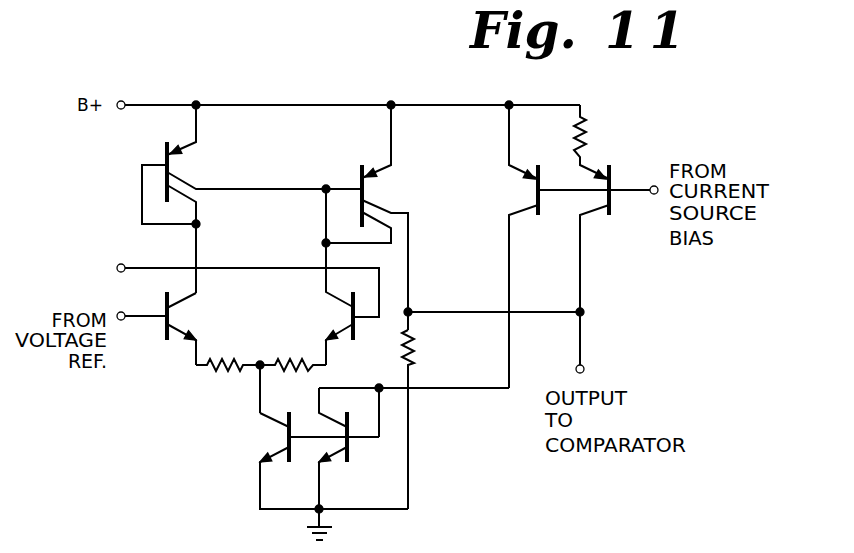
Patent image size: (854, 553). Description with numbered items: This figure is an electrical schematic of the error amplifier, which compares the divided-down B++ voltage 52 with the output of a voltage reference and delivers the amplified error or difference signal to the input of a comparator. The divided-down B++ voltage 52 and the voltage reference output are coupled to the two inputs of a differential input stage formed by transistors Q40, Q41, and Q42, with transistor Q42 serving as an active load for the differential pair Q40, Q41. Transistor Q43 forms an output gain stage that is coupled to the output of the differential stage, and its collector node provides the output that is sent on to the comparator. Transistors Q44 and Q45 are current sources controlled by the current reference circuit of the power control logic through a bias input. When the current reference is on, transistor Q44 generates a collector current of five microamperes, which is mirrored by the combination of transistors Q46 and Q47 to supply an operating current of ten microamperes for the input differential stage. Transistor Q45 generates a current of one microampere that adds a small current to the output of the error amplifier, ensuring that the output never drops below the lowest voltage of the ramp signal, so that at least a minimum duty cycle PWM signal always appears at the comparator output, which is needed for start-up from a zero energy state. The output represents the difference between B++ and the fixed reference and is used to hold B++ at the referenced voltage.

The transistor Q40 is at (177, 317).
The transistor Q41 is at (336, 317).
The transistor Q42 is at (234, 199).
The transistor Q43 is at (371, 191).
The transistor Q44 is at (527, 191).
The transistor Q45 is at (610, 216).
The transistor Q46 is at (271, 438).
The transistor Q47 is at (348, 463).
The divided-down B++ voltage 52 is at (146, 268).